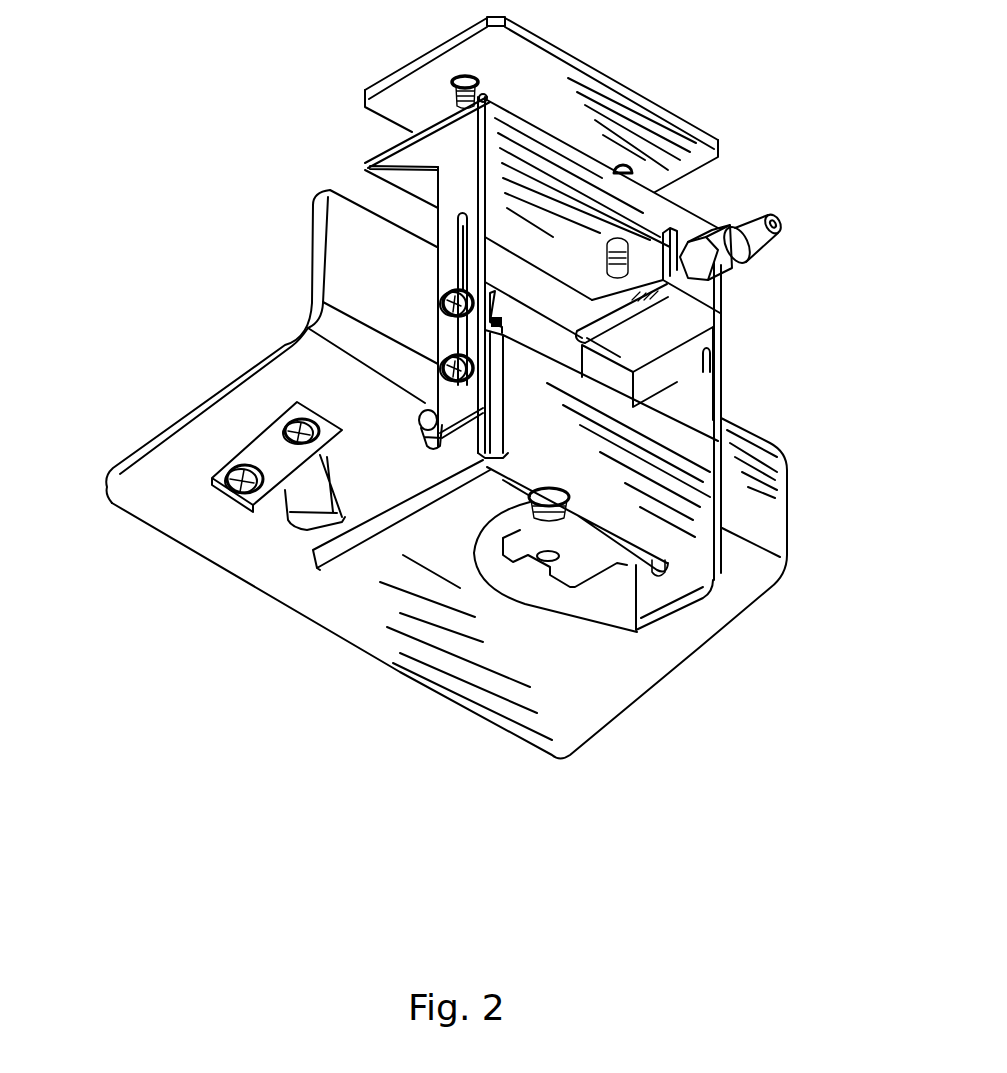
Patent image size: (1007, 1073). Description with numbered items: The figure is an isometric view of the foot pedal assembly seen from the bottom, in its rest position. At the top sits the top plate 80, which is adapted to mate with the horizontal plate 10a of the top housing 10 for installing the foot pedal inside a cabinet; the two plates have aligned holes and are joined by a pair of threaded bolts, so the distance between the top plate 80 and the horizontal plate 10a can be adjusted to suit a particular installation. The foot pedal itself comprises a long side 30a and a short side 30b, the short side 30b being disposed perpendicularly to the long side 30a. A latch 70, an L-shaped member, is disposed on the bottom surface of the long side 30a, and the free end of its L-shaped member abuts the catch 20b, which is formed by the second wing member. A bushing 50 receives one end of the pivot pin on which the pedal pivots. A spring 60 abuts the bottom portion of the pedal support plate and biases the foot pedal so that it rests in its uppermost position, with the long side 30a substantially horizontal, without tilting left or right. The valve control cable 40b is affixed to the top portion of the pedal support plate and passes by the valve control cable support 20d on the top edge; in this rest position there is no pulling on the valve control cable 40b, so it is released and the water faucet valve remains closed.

The top plate 80 is at (517, 68).
The top housing 10 is at (457, 157).
The horizontal plate 10a is at (663, 213).
The short side 30b is at (360, 238).
The long side 30a is at (257, 563).
The catch 20b is at (335, 545).
The valve control cable support 20d is at (710, 293).
The valve control cable 40b is at (757, 243).
The bushing 50 is at (413, 402).
The latch 70 is at (297, 497).
The spring 60 is at (637, 632).